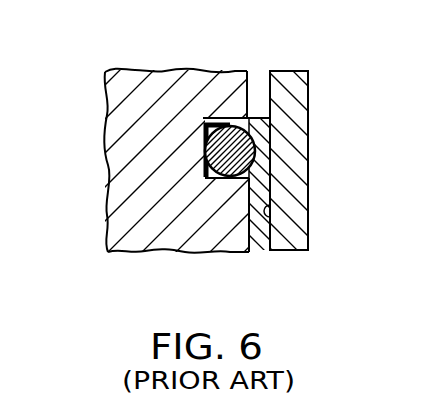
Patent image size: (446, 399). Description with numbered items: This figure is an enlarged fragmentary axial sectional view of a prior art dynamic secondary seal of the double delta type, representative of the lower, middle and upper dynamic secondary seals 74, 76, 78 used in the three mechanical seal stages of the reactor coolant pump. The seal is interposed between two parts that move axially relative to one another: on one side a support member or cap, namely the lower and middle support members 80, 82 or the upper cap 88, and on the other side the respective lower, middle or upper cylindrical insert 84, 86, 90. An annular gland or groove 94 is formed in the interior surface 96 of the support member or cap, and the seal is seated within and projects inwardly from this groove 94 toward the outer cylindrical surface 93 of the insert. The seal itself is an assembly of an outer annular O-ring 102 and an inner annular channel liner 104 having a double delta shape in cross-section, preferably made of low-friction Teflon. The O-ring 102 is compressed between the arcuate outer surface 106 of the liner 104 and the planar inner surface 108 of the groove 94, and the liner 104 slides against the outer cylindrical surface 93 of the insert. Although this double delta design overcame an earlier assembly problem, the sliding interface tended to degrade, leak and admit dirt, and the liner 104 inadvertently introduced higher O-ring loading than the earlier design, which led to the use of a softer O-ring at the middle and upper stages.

The lower support member 80 is at (218, 139).
The middle support member 82 is at (218, 139).
The upper cap 88 is at (149, 72).
The groove 94 is at (247, 84).
The interior surface 96 is at (345, 154).
The lower dynamic secondary seal 74 is at (345, 154).
The middle dynamic secondary seal 76 is at (345, 154).
The upper dynamic secondary seal 78 is at (345, 154).
The channel liner 104 is at (345, 154).
The lower cylindrical insert 84 is at (345, 154).
The middle cylindrical insert 86 is at (345, 154).
The upper cylindrical insert 90 is at (345, 154).
The outer cylindrical surface 93 is at (287, 71).
The O-ring 102 is at (204, 133).
The inner surface of the groove 108 is at (206, 174).
The arcuate outer surface 106 is at (233, 178).